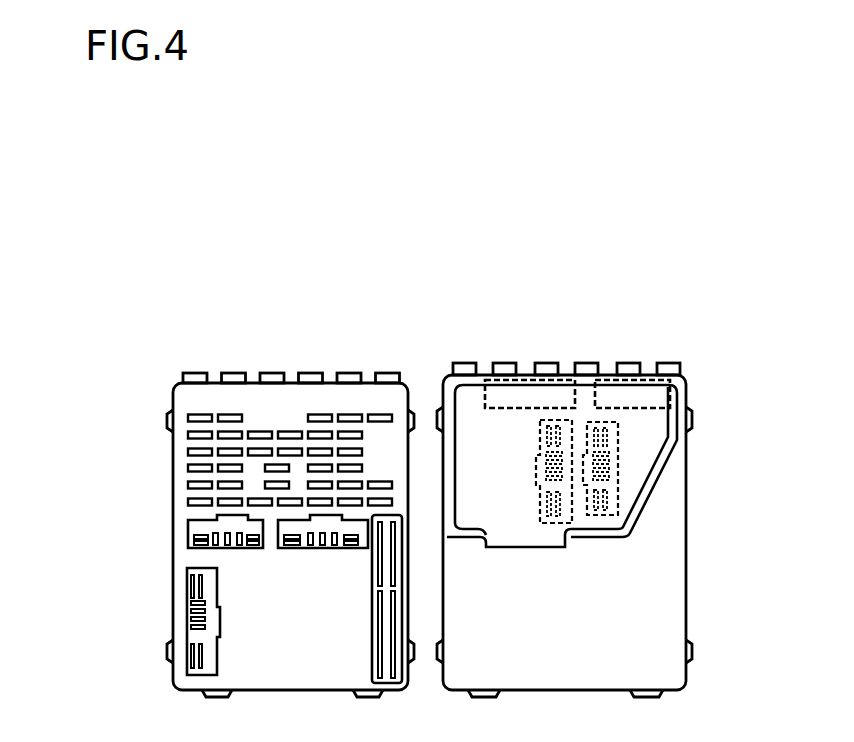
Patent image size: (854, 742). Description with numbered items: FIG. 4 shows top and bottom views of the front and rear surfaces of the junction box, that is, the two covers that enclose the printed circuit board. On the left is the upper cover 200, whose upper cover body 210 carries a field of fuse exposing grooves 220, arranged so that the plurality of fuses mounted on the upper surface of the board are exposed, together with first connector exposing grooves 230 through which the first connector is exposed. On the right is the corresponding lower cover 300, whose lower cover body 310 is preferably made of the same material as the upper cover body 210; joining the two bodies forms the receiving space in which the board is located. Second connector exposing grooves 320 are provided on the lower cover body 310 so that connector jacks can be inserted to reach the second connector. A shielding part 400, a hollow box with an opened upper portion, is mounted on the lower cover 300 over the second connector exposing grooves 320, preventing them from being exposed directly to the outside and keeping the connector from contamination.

The upper cover 200 is at (84, 418).
The upper cover body 210 is at (178, 440).
The fuse exposing grooves 220 is at (192, 468).
The first connector exposing grooves 230 is at (190, 608).
The lower cover 300 is at (778, 398).
The lower cover body 310 is at (678, 507).
The second connector exposing grooves 320 is at (665, 407).
The shielding part 400 is at (636, 533).